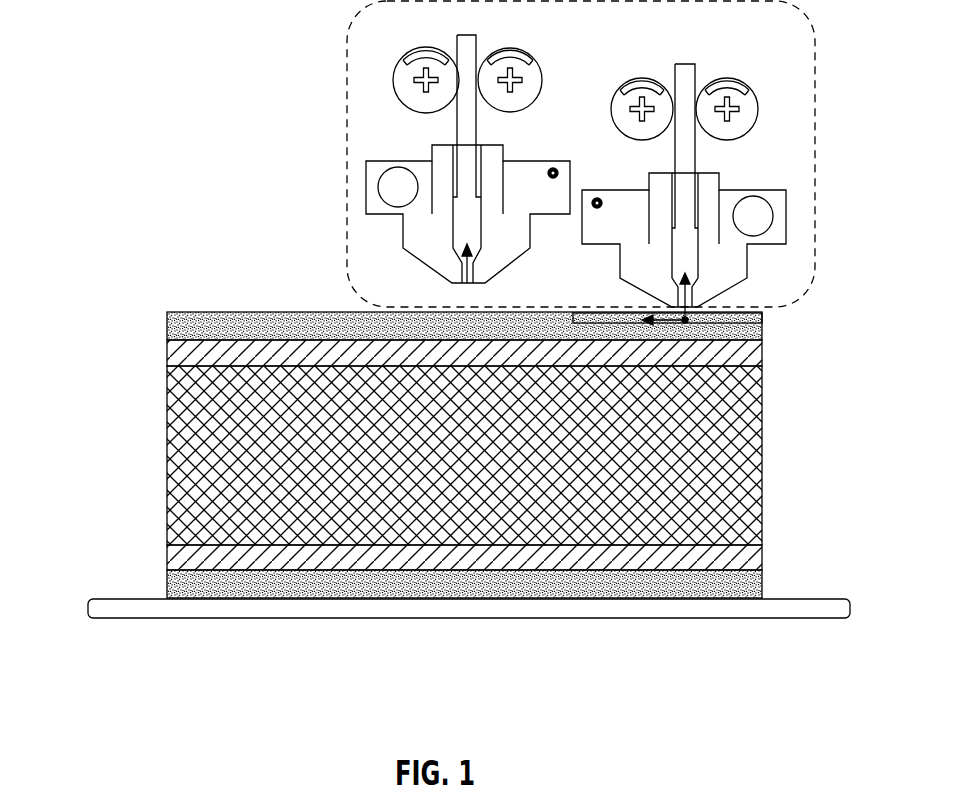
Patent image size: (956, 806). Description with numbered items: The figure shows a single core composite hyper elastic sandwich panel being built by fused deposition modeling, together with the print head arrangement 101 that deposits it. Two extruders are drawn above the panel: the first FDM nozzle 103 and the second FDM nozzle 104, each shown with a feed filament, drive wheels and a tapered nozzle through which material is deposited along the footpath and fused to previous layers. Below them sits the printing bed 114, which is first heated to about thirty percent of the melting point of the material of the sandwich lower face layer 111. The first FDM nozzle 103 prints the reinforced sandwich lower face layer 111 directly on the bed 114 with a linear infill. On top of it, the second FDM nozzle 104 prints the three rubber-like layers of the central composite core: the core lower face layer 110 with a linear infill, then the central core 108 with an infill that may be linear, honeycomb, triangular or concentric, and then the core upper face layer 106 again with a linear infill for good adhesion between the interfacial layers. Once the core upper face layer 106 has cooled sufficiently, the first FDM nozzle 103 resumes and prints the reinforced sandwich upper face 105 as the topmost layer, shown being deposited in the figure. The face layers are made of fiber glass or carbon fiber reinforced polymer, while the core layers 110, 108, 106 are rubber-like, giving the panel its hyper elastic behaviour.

The additive manufacturing print head assembly 101 is at (757, 39).
The FDM Nozzle 1 103 is at (620, 278).
The FDM Nozzle 2 104 is at (430, 157).
The sandwich upper face 105 is at (240, 325).
The core upper face layer 106 is at (190, 357).
The central core 108 is at (145, 343).
The core lower face layer 110 is at (180, 552).
The sandwich lower face layer 111 is at (470, 583).
The printing bed 114 is at (727, 605).